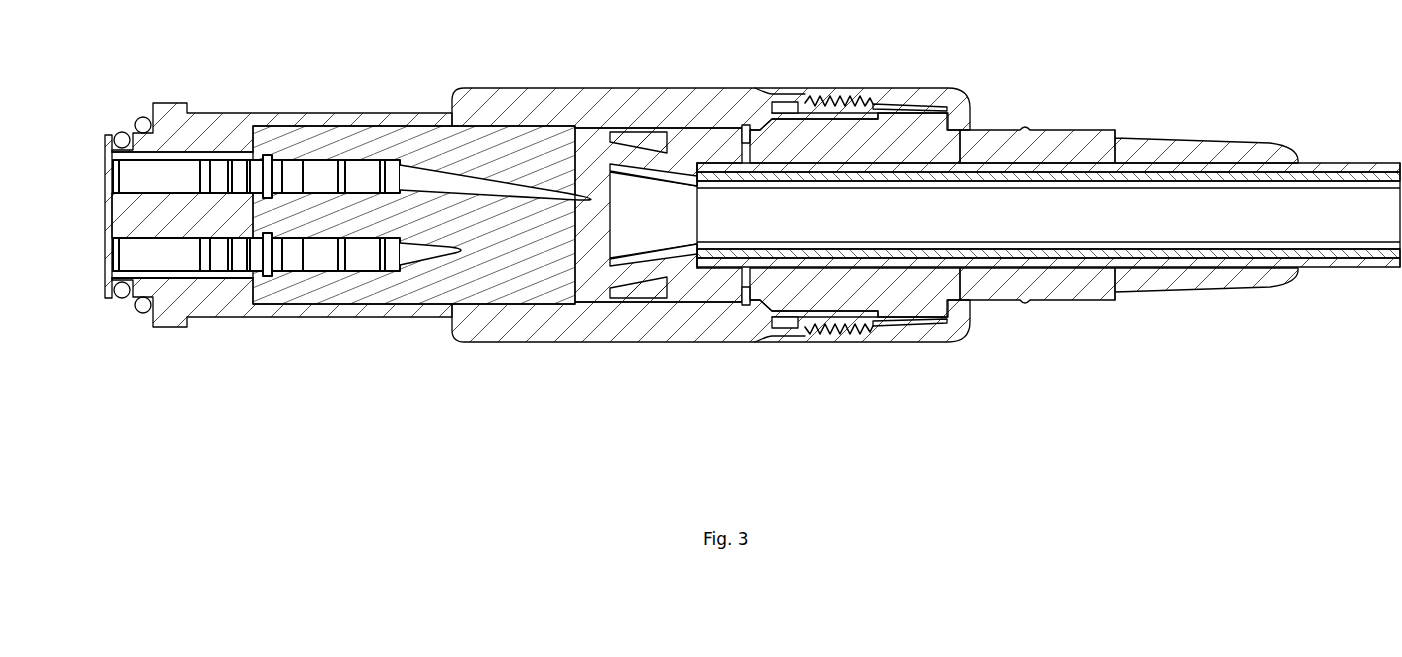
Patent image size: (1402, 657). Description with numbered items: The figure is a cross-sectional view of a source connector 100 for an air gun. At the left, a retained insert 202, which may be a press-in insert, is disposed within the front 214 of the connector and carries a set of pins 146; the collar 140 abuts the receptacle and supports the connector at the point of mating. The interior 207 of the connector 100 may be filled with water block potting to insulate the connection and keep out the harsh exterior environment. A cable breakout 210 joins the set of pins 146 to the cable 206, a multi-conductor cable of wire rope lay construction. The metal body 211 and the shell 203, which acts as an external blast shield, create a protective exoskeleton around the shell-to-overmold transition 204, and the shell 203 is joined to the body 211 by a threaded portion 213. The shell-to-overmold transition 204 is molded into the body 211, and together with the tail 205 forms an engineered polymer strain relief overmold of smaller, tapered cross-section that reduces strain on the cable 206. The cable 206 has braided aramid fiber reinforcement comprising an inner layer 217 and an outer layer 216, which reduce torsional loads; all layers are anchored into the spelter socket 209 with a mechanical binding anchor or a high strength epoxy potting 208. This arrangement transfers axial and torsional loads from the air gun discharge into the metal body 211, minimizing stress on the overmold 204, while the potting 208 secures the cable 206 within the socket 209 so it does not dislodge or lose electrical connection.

The source connector 100 is at (482, 482).
The collar 140 is at (147, 115).
The set of pins 146 is at (200, 285).
The retained insert 202 is at (130, 205).
The shell 203 is at (897, 100).
The shell-to-overmold transition 204 is at (965, 132).
The tail 205 is at (1143, 145).
The cable 206 is at (1282, 202).
The interior 207 is at (435, 152).
The potting 208 is at (642, 128).
The spelter socket 209 is at (596, 160).
The cable breakout 210 is at (502, 190).
The body 211 is at (738, 107).
The threaded portion 213 is at (858, 335).
The front 214 is at (195, 148).
The outer layer 216 is at (1281, 167).
The inner layer 217 is at (1313, 242).